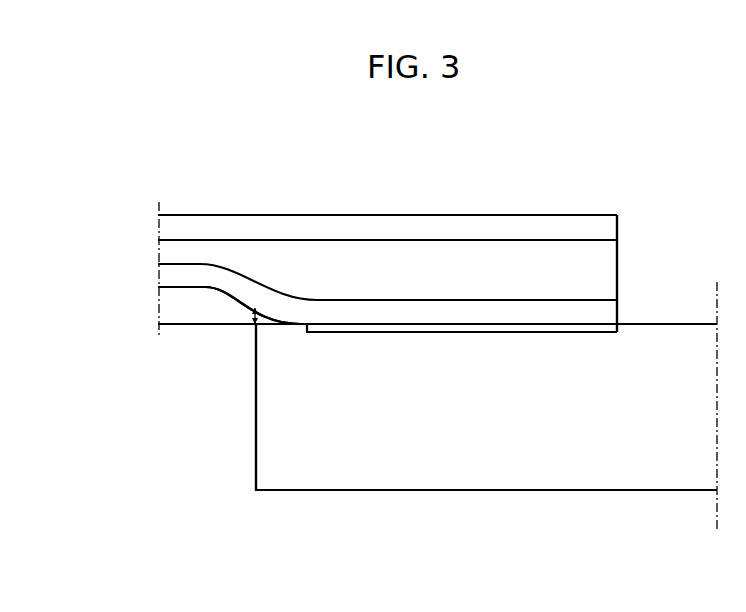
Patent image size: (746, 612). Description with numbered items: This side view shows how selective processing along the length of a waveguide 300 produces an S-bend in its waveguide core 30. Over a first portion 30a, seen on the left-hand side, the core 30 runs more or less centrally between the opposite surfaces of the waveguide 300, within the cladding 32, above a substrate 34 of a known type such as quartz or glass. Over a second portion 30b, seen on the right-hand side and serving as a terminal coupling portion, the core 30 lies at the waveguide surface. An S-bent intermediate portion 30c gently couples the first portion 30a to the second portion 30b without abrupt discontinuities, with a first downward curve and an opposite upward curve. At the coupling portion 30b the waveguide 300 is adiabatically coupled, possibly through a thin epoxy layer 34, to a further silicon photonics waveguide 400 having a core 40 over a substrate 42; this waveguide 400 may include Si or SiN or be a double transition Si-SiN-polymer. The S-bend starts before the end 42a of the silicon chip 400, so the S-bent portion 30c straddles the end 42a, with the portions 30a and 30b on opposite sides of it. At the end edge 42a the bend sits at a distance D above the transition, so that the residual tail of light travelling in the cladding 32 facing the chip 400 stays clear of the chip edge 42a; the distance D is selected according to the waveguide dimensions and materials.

The waveguide 300 is at (495, 185).
The cladding 32 is at (367, 257).
The substrate 34 is at (575, 215).
The waveguide core 30 is at (203, 289).
The first portion 30a is at (177, 277).
The second portion 30b is at (603, 312).
The S-bent intermediate portion 30c is at (247, 290).
The distance D is at (260, 315).
The core 40 is at (563, 332).
The substrate 42 is at (405, 468).
The end 42a is at (253, 453).
The silicon photonics waveguide 400 is at (547, 510).